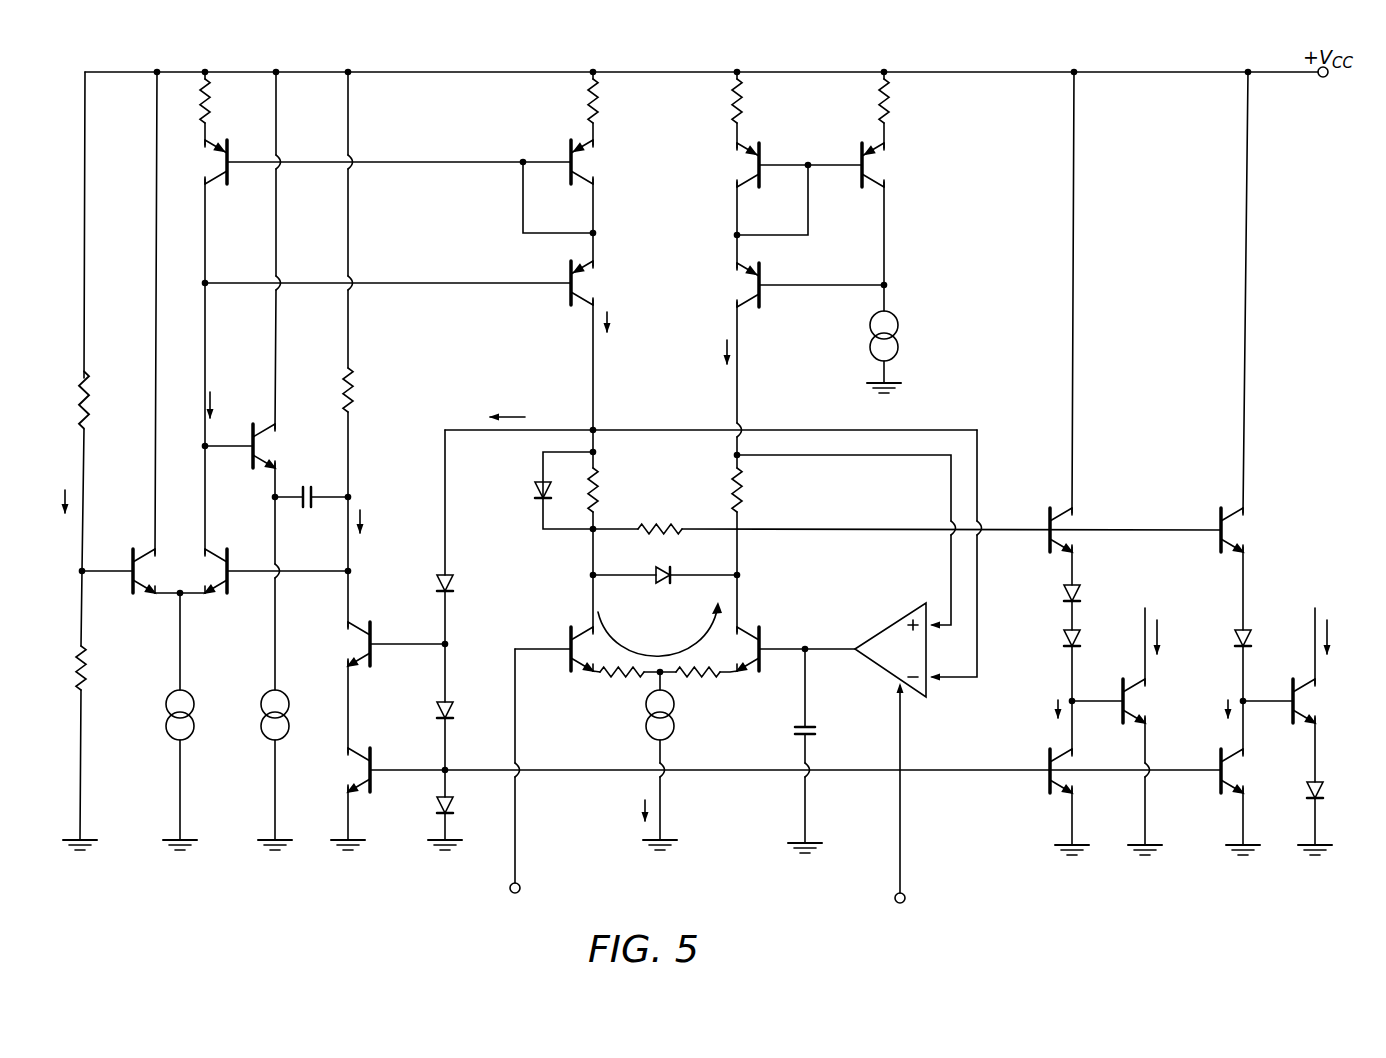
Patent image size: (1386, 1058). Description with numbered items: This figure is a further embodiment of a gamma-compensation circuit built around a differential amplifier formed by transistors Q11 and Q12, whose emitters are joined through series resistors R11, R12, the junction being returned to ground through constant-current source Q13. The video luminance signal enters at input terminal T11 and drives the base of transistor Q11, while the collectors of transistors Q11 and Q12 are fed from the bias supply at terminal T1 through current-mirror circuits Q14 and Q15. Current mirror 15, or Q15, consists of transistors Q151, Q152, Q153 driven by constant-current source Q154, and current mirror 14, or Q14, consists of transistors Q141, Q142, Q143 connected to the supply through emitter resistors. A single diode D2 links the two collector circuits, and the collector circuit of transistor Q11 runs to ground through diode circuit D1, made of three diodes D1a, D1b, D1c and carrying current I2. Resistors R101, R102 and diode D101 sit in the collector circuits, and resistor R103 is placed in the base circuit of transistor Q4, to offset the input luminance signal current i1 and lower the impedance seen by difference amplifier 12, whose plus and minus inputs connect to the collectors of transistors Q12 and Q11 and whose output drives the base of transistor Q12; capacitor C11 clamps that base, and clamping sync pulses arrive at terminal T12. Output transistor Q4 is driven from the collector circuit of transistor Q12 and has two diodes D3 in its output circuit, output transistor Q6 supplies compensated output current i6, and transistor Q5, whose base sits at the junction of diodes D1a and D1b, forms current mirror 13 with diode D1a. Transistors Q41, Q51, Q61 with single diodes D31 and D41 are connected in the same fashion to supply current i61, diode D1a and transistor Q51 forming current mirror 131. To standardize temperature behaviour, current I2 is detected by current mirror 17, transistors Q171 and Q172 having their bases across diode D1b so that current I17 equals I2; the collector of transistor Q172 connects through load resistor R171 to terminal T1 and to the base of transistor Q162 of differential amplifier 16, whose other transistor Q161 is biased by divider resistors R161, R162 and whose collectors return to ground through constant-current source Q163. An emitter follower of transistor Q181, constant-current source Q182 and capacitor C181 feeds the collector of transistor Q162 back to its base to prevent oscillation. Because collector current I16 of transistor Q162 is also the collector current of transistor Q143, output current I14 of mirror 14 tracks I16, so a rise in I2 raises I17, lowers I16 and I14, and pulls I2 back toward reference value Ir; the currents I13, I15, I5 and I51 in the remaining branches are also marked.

The difference amplifier 12 is at (882, 682).
The current mirror circuit 13 is at (744, 824).
The current-mirror circuit 14 is at (451, 154).
The current-mirror circuit 15 is at (822, 124).
The differential amplifier 16 is at (186, 566).
The current mirror circuit 17 is at (401, 603).
The current-mirror circuit 131 is at (1296, 832).
The bias supply voltage terminal T1 is at (1321, 78).
The input terminal T11 is at (519, 892).
The clamping sync pulse terminal T12 is at (904, 902).
The transistor Q141 is at (564, 300).
The transistor Q142 is at (560, 178).
The transistor Q143 is at (232, 170).
The current-mirror circuit Q14 is at (444, 247).
The transistor Q151 is at (764, 300).
The transistor Q152 is at (764, 180).
The transistor Q153 is at (858, 182).
The constant-current source Q154 is at (898, 333).
The current-mirror circuit Q15 is at (855, 279).
The transistor Q161 is at (130, 594).
The transistor Q162 is at (235, 592).
The constant current source Q163 is at (168, 740).
The transistor Q181 is at (250, 467).
The constant-current source Q182 is at (262, 742).
The transistor Q171 is at (372, 790).
The transistor Q172 is at (372, 664).
The transistor Q11 is at (565, 664).
The transistor Q12 is at (765, 664).
The constant-current source Q13 is at (674, 730).
The output transistor Q4 is at (1046, 550).
The transistor Q5 is at (1046, 790).
The output transistor Q6 is at (1118, 720).
The transistor Q41 is at (1218, 552).
The transistor Q51 is at (1218, 790).
The transistor Q61 is at (1288, 720).
The resistor R11 is at (612, 680).
The resistor R12 is at (690, 680).
The resistor R101 is at (598, 484).
The resistor R102 is at (742, 484).
The resistor R103 is at (658, 536).
The resistor R161 is at (90, 392).
The resistor R162 is at (87, 658).
The bias/load resistor R171 is at (352, 384).
The capacitor C11 is at (818, 730).
The capacitor C181 is at (300, 510).
The series connected diode circuit D1 is at (494, 682).
The first diode D1a is at (452, 808).
The second diode D1b is at (452, 712).
The third diode D1c is at (471, 537).
The diode D2 is at (665, 592).
The diodes D3 is at (1066, 598).
The diode D31 is at (1236, 640).
The diode D41 is at (1323, 790).
The diode D101 is at (536, 493).
The current I2 is at (711, 410).
The current I5 is at (1044, 708).
The current I51 is at (1210, 708).
The current I13 is at (631, 808).
The current I14 is at (621, 324).
The current I15 is at (716, 355).
The collector current I16 is at (223, 407).
The current I17 is at (374, 524).
The reference value Ir is at (55, 502).
The input luminance signal current i1 is at (660, 629).
The compensated output current i6 is at (1166, 637).
The compensated output current i61 is at (1341, 637).